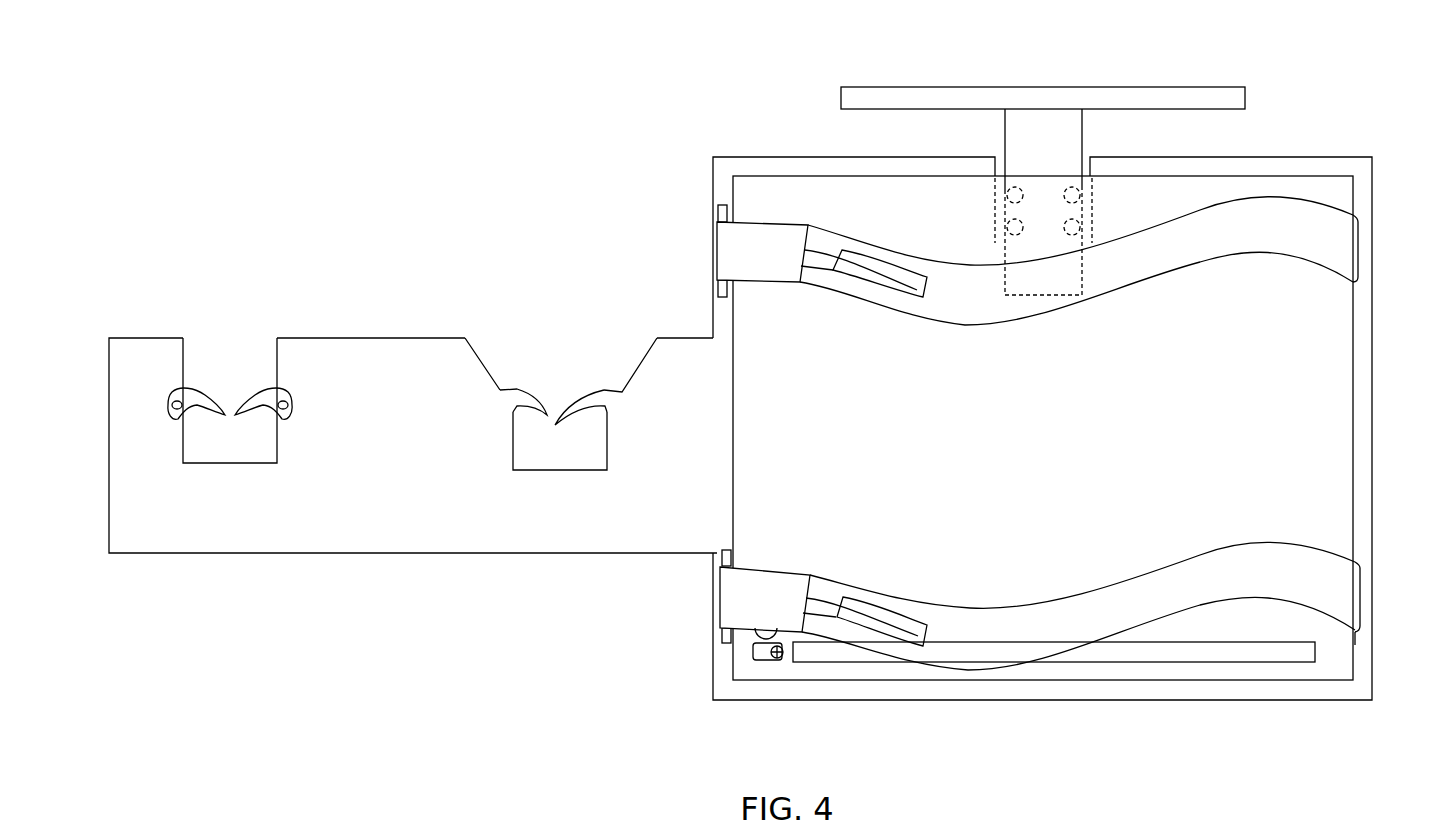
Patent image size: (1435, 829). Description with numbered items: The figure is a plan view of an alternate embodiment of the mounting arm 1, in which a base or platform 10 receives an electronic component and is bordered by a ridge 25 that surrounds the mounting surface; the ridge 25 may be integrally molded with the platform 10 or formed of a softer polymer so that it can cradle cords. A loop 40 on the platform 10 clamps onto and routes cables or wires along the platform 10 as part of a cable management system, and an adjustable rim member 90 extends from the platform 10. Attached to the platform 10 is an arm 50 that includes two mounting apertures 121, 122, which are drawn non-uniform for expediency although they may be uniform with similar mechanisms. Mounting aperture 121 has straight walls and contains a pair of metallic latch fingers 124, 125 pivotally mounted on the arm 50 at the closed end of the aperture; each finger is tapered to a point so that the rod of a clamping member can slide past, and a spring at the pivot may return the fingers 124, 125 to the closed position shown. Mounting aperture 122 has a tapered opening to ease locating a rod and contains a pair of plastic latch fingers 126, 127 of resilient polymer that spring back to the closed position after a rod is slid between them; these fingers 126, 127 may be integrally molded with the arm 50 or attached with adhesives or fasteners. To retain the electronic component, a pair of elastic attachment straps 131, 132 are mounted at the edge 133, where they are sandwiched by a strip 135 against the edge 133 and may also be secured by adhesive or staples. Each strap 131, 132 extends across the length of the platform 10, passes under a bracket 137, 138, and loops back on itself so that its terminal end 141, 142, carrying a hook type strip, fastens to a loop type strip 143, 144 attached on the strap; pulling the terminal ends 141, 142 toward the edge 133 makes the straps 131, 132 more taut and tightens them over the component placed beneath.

The mounting arm 1 is at (585, 198).
The platform 10 is at (1373, 408).
The ridge 25 is at (1187, 673).
The loop 40 is at (770, 661).
The arm 50 is at (220, 553).
The adjustable rim member 90 is at (1137, 87).
The mounting aperture 121 is at (186, 350).
The mounting aperture 122 is at (473, 350).
The metallic latch finger 124 is at (198, 393).
The metallic latch finger 125 is at (253, 392).
The plastic latch finger 126 is at (517, 393).
The plastic latch finger 127 is at (603, 388).
The attachment strap 131 is at (1125, 590).
The attachment strap 132 is at (1113, 272).
The edge 133 is at (1358, 257).
The strip 135 is at (1362, 648).
The bracket 137 is at (722, 553).
The bracket 138 is at (718, 213).
The terminal end 141 is at (873, 618).
The terminal end 142 is at (872, 277).
The loop type strip 143 is at (937, 627).
The loop type strip 144 is at (922, 298).